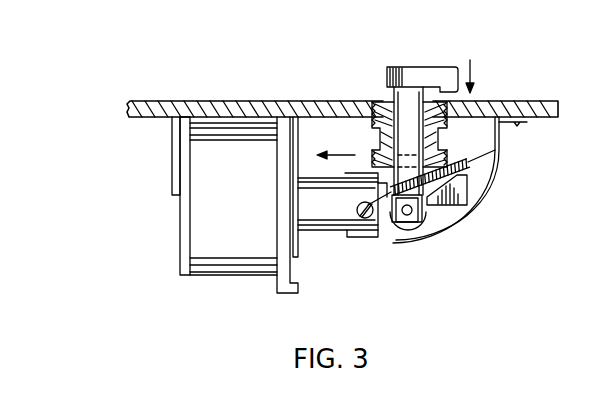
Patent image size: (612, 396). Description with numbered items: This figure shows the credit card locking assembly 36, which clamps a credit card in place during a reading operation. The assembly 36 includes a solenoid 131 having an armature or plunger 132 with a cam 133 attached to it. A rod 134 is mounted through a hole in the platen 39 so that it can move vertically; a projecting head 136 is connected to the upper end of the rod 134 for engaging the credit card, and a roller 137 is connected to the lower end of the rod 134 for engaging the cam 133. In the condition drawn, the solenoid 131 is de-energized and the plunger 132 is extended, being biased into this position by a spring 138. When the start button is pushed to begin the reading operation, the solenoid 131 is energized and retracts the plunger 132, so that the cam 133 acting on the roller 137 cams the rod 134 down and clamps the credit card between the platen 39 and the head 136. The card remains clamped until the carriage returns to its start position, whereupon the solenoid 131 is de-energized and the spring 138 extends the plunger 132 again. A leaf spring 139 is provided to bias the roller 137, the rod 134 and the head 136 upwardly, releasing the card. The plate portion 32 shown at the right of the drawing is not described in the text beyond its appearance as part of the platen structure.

The top plate 32 is at (522, 100).
The credit card locking assembly 36 is at (395, 56).
The platen 39 is at (192, 100).
The solenoid 131 is at (226, 252).
The plunger 132 is at (320, 213).
The cam 133 is at (440, 210).
The rod 134 is at (412, 95).
The projecting head 136 is at (440, 67).
The roller 137 is at (412, 227).
The spring 138 is at (467, 172).
The leaf spring 139 is at (472, 207).